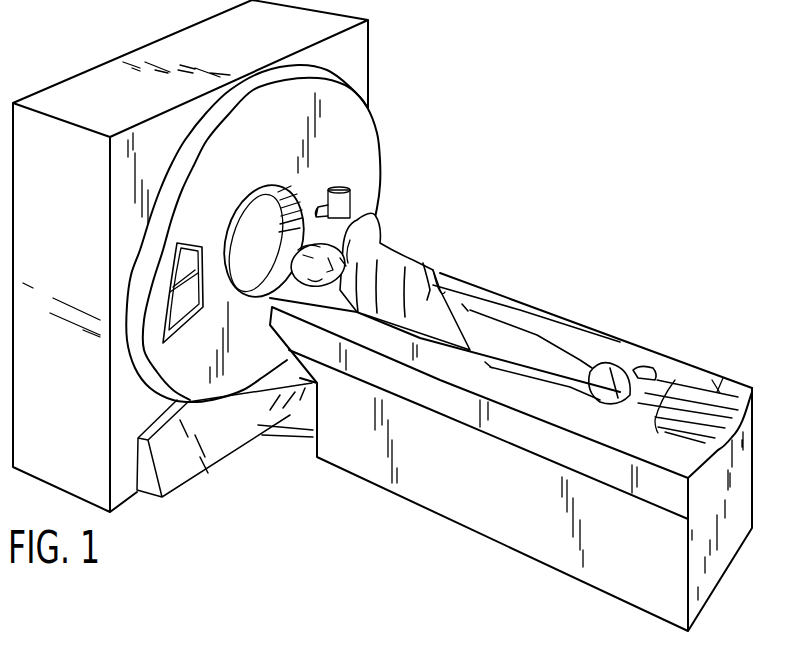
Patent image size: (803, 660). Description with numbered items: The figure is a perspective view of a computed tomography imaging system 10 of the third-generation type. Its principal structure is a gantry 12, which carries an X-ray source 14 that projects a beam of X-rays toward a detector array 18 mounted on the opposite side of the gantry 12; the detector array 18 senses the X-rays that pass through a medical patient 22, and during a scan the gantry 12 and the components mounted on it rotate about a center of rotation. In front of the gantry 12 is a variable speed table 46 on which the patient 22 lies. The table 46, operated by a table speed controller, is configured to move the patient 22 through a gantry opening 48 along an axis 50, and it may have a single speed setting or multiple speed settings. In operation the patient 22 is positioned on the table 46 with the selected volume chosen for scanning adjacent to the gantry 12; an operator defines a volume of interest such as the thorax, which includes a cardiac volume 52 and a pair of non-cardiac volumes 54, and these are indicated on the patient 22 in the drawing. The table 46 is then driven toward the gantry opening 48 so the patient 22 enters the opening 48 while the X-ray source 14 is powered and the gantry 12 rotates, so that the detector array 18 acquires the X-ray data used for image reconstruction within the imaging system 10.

The CT imaging system 10 is at (495, 165).
The gantry 12 is at (359, 154).
The X-ray source 14 is at (350, 205).
The detector array 18 is at (187, 320).
The medical patient 22 is at (585, 350).
The variable speed table 46 is at (497, 520).
The gantry opening 48 is at (248, 228).
The axis 50 is at (693, 410).
The cardiac volume 52 is at (393, 262).
The non-cardiac volumes 54 is at (373, 249).